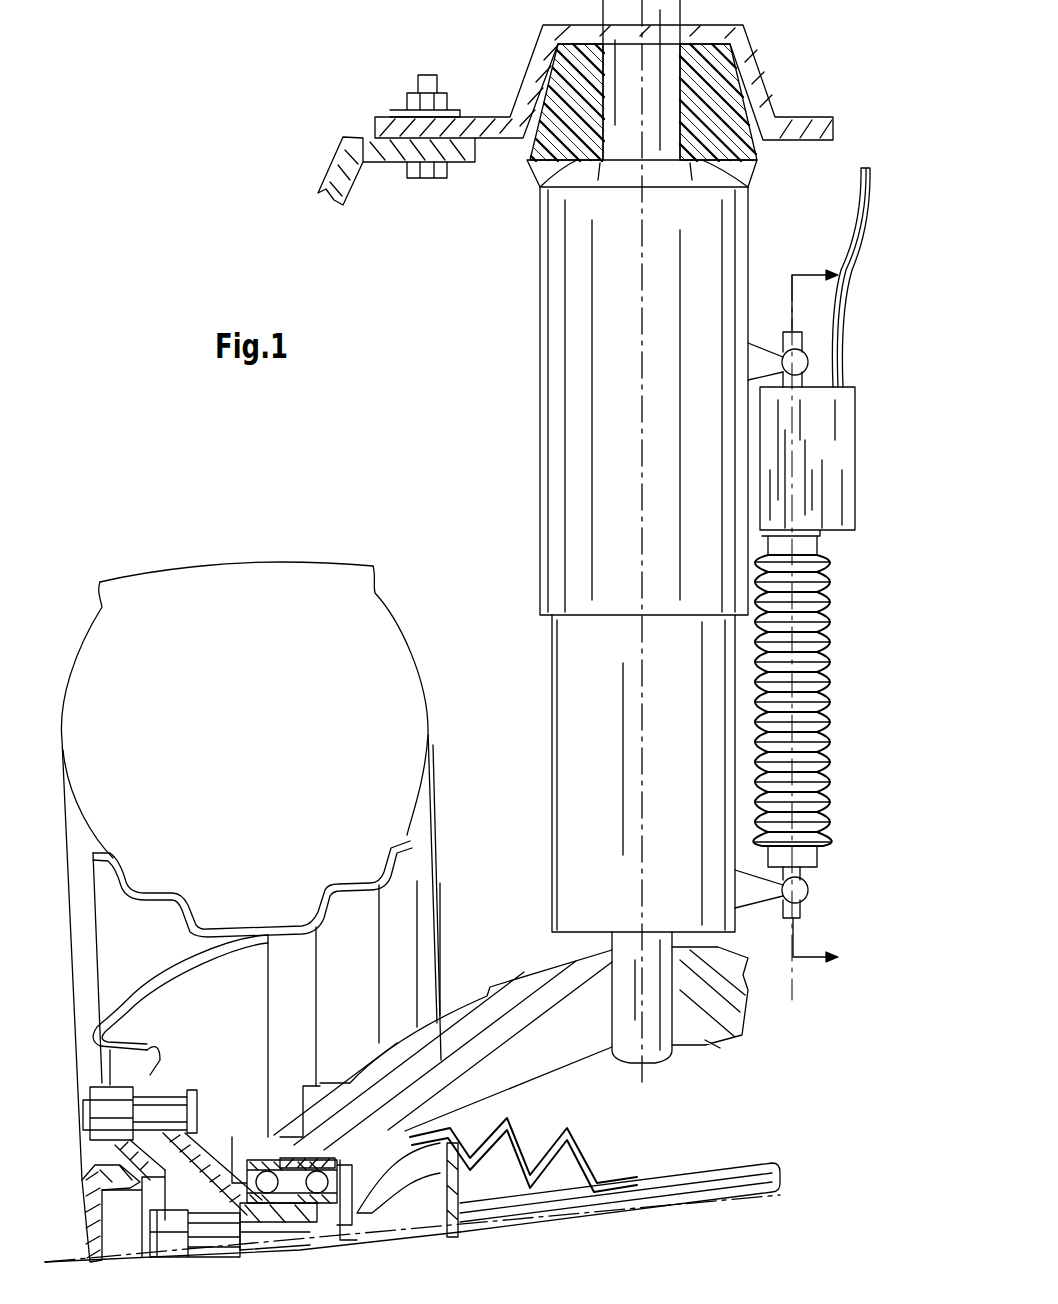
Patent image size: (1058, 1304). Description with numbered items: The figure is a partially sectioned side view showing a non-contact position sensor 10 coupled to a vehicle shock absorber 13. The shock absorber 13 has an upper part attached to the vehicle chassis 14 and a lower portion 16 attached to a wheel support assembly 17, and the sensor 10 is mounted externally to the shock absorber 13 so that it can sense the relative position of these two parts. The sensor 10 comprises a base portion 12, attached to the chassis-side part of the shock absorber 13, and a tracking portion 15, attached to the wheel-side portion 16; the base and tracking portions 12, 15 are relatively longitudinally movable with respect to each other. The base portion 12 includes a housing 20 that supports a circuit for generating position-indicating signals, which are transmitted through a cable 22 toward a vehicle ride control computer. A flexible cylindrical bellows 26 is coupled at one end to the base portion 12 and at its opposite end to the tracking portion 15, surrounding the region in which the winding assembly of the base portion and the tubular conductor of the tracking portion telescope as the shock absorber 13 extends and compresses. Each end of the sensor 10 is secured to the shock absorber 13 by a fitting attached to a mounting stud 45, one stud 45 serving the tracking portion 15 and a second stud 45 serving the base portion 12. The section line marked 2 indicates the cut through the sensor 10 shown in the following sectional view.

The non-contact position sensor 10 is at (815, 637).
The base portion 12 is at (855, 490).
The shock absorber 13 is at (578, 380).
The vehicle chassis 14 is at (742, 59).
The tracking portion 15 is at (807, 855).
The portion of shock absorber 16 is at (600, 762).
The wheel support assembly 17 is at (562, 1025).
The housing 20 is at (832, 431).
The cable 22 is at (866, 220).
The flexible cylindrical bellows 26 is at (822, 786).
The mounting stud 45 is at (763, 357).
The section line 2- 2 is at (815, 624).